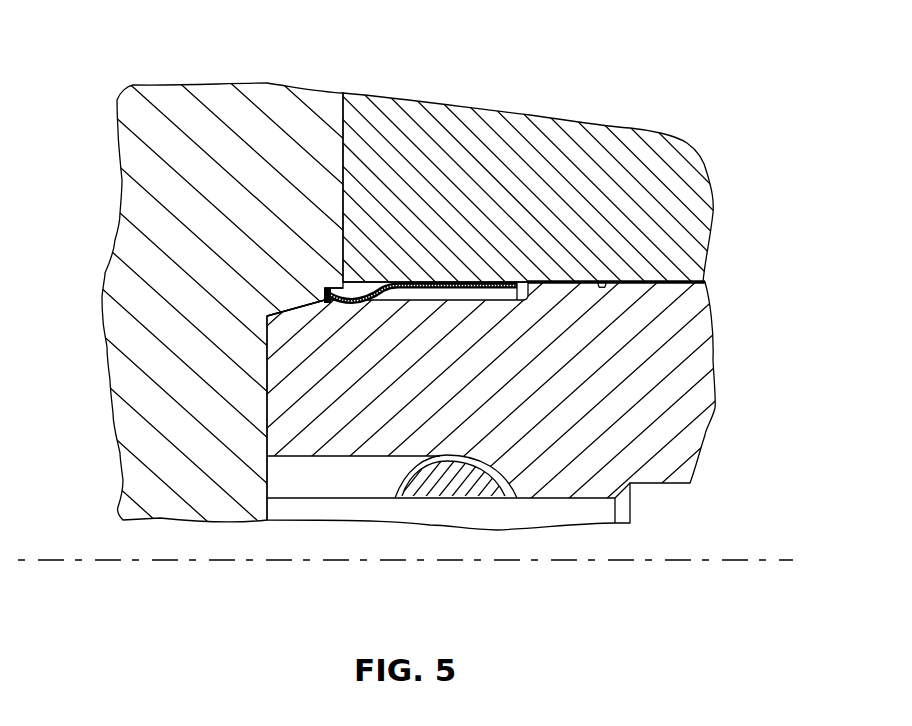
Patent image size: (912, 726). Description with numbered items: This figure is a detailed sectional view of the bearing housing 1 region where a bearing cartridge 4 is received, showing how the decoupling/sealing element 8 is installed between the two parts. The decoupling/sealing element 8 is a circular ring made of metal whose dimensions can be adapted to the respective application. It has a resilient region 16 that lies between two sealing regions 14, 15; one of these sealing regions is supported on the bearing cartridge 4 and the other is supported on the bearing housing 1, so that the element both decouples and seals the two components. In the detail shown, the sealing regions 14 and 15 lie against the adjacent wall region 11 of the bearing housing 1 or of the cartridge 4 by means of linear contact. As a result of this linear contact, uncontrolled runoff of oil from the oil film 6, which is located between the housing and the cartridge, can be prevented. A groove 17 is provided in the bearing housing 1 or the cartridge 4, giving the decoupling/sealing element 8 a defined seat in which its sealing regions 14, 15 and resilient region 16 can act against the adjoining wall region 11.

The bearing housing 1 is at (704, 148).
The bearing cartridge 4 is at (676, 400).
The oil film 6 is at (602, 284).
The decoupling/sealing element 8 is at (417, 288).
The wall region 11 is at (363, 265).
The sealing region 14 is at (509, 279).
The sealing region 15 is at (345, 313).
The resilient region 16 is at (466, 279).
The groove 17 is at (267, 107).